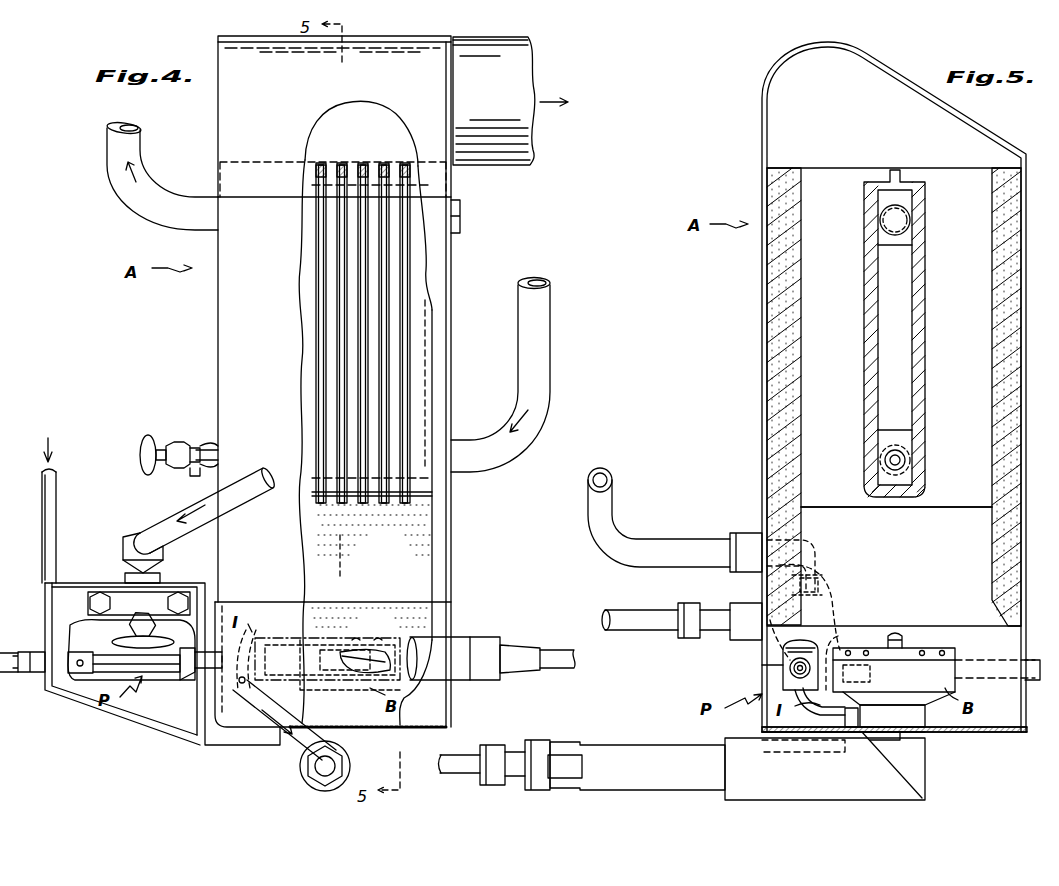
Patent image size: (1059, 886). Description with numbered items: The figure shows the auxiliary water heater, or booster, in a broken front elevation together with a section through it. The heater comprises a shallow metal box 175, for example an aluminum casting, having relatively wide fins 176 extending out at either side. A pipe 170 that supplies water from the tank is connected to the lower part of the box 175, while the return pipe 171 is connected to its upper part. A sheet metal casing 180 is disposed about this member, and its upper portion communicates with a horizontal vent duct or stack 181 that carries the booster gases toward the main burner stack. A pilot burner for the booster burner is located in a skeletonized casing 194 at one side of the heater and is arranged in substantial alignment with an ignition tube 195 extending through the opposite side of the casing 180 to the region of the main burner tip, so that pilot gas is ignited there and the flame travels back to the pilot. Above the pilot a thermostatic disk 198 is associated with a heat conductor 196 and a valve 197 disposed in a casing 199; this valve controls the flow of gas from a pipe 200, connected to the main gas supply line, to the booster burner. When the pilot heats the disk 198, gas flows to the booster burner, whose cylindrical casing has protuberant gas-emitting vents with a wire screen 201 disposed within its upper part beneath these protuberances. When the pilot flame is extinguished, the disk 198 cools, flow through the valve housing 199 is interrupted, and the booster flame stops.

In FIG. 4, the pipe 170 is at (526, 356).
In FIG. 4, the return pipe 171 is at (118, 157).
In FIG. 4, the shallow metal box 175 is at (355, 505).
In FIG. 5, the shallow metal box 175 is at (901, 530).
In FIG. 5, the fins 176 is at (940, 186).
In FIG. 4, the sheet metal casing 180 is at (222, 303).
In FIG. 5, the sheet metal casing 180 is at (762, 333).
In FIG. 4, the vent duct or stack 181 is at (505, 160).
In FIG. 4, the skeletonized casing 194 is at (68, 592).
In FIG. 5, the skeletonized casing 194 is at (835, 612).
In FIG. 4, the ignition tube 195 is at (560, 657).
In FIG. 5, the ignition tube 195 is at (682, 621).
In FIG. 4, the heat conductor 196 is at (185, 672).
In FIG. 5, the heat conductor 196 is at (772, 668).
In FIG. 5, the valve 197 is at (820, 566).
In FIG. 5, the thermostatic disk 198 is at (838, 636).
In FIG. 4, the valve casing 199 is at (158, 568).
In FIG. 4, the gas pipe 200 is at (248, 497).
In FIG. 5, the gas pipe 200 is at (605, 500).
In FIG. 4, the wire screen 201 is at (358, 650).